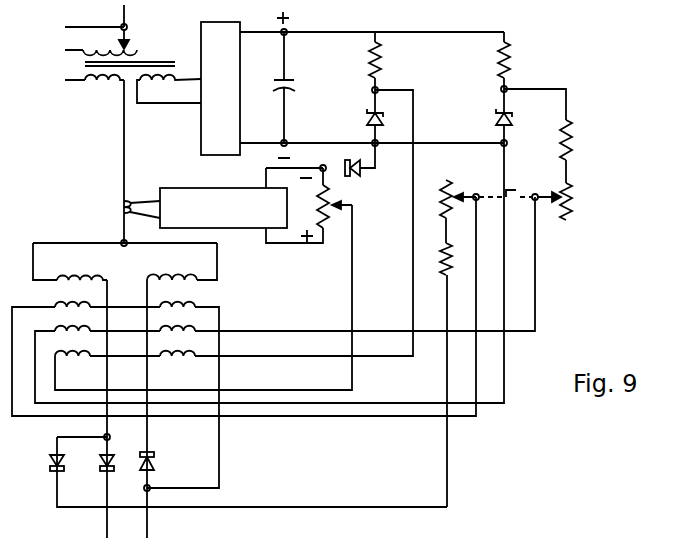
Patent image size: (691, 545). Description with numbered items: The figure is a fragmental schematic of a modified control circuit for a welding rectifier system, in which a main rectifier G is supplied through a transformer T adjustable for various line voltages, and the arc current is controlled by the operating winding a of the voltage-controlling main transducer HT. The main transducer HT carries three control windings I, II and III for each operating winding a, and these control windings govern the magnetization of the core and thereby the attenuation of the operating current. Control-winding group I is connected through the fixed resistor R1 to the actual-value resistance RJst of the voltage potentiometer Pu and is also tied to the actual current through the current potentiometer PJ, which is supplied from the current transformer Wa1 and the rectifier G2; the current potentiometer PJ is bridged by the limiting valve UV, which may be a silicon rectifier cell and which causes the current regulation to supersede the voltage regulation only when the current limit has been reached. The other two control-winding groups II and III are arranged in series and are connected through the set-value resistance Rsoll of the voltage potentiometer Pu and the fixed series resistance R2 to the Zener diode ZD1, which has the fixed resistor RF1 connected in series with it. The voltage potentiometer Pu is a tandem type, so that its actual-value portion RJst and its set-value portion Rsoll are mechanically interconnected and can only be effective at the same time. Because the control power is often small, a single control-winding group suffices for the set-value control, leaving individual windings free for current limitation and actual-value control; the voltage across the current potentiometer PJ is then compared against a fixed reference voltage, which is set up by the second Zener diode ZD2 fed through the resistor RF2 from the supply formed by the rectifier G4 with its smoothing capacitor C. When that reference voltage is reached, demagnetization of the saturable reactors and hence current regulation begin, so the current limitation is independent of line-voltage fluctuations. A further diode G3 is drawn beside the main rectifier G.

The transformer T is at (56, 80).
The rectifier G4 is at (200, 117).
The capacitor C is at (292, 88).
The resistor RF2 is at (383, 72).
The second Zener diode ZD2 is at (368, 108).
The fixed resistor RF1 is at (512, 71).
The Zener diode ZD1 is at (497, 110).
The fixed series resistance R2 is at (576, 140).
The resistance of the voltage potentiometer Rsoll is at (574, 213).
The limiting valve UV is at (356, 178).
The current potentiometer PJ is at (344, 192).
The rectifier G2 is at (185, 189).
The current transformer Wa1 is at (118, 204).
The resistance of the potentiometer RJst is at (450, 186).
The fixed resistor R1 is at (430, 269).
The voltage potentiometer Pu is at (512, 190).
The main transducer HT is at (136, 277).
The operating winding a is at (75, 273).
The control winding I is at (55, 301).
The control winding II is at (55, 326).
The control winding III is at (125, 365).
The rectifier diode G3 is at (48, 466).
The main rectifier G is at (133, 488).